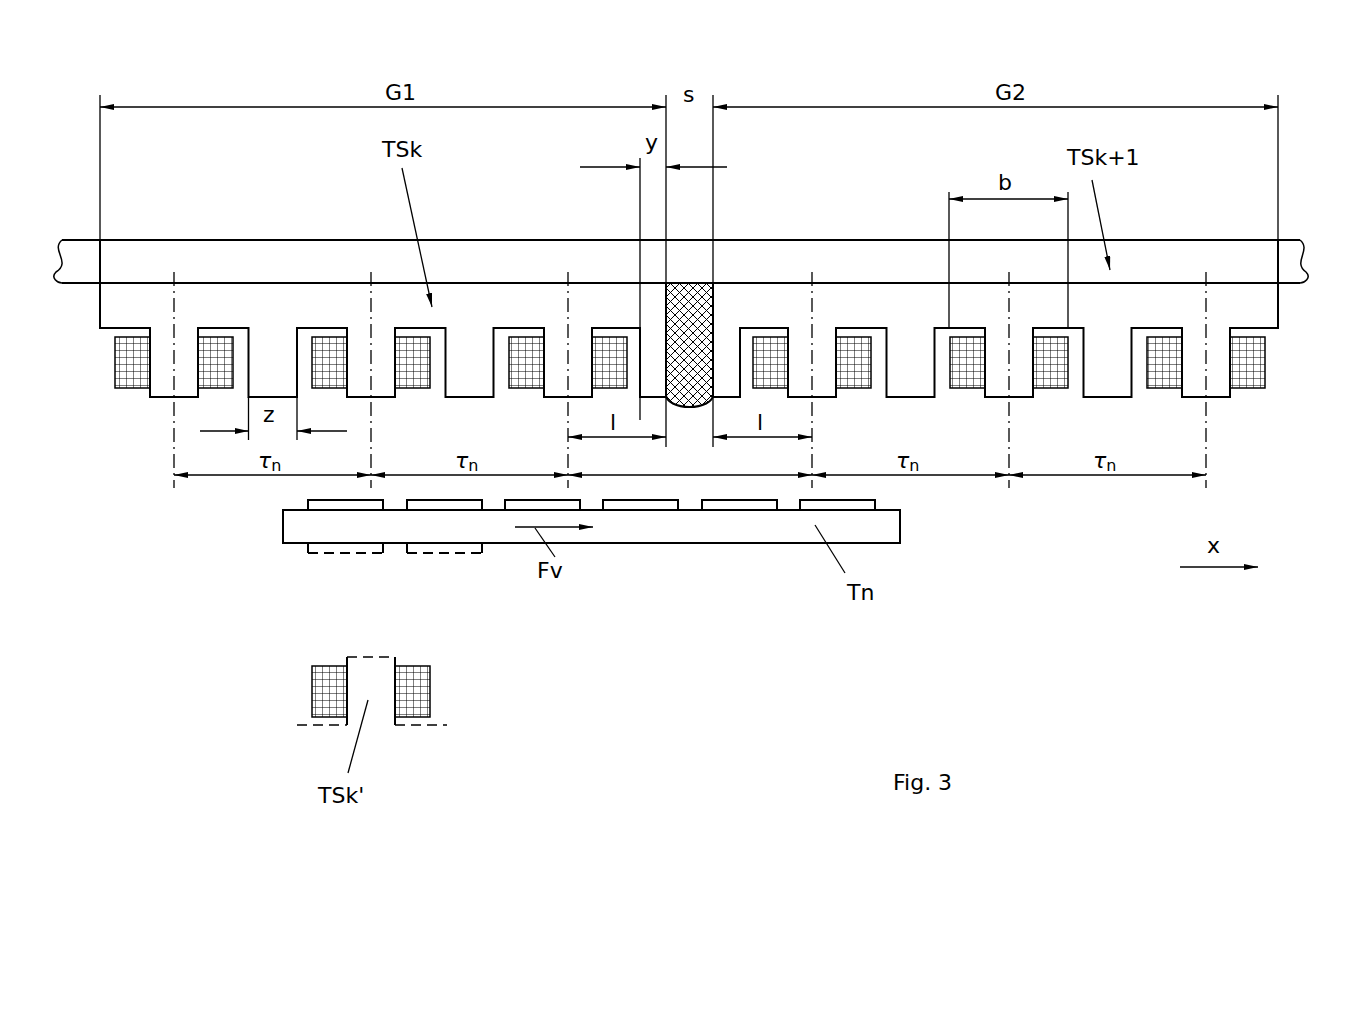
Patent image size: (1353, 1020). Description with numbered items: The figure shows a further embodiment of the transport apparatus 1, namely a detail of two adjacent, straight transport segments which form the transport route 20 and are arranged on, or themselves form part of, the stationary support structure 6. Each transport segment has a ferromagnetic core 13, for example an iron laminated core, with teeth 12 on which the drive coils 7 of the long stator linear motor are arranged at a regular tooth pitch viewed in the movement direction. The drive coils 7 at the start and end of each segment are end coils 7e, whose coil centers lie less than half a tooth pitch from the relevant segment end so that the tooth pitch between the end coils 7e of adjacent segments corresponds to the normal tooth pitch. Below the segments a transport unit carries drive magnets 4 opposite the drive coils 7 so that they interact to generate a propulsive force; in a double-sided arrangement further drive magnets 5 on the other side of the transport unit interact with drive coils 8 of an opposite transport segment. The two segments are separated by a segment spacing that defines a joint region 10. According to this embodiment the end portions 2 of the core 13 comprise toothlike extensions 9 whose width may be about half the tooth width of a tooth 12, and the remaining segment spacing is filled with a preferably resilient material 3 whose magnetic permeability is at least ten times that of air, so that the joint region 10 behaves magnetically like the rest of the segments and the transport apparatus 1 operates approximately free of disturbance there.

The transport apparatus 1 is at (155, 602).
The end portions 2 is at (645, 453).
The resilient material 3 is at (693, 332).
The drive magnets 4 is at (320, 505).
The drive magnets 5 is at (323, 546).
The stationary support structure 6 is at (270, 263).
The drive coils 7 is at (133, 367).
The end coil 7e is at (517, 353).
The drive coils 8 is at (330, 697).
The toothlike extension 9 is at (650, 378).
The joint region 10 is at (686, 275).
The tooth 12 is at (158, 393).
The ferromagnetic core 13 is at (222, 313).
The transport route 20 is at (1208, 238).